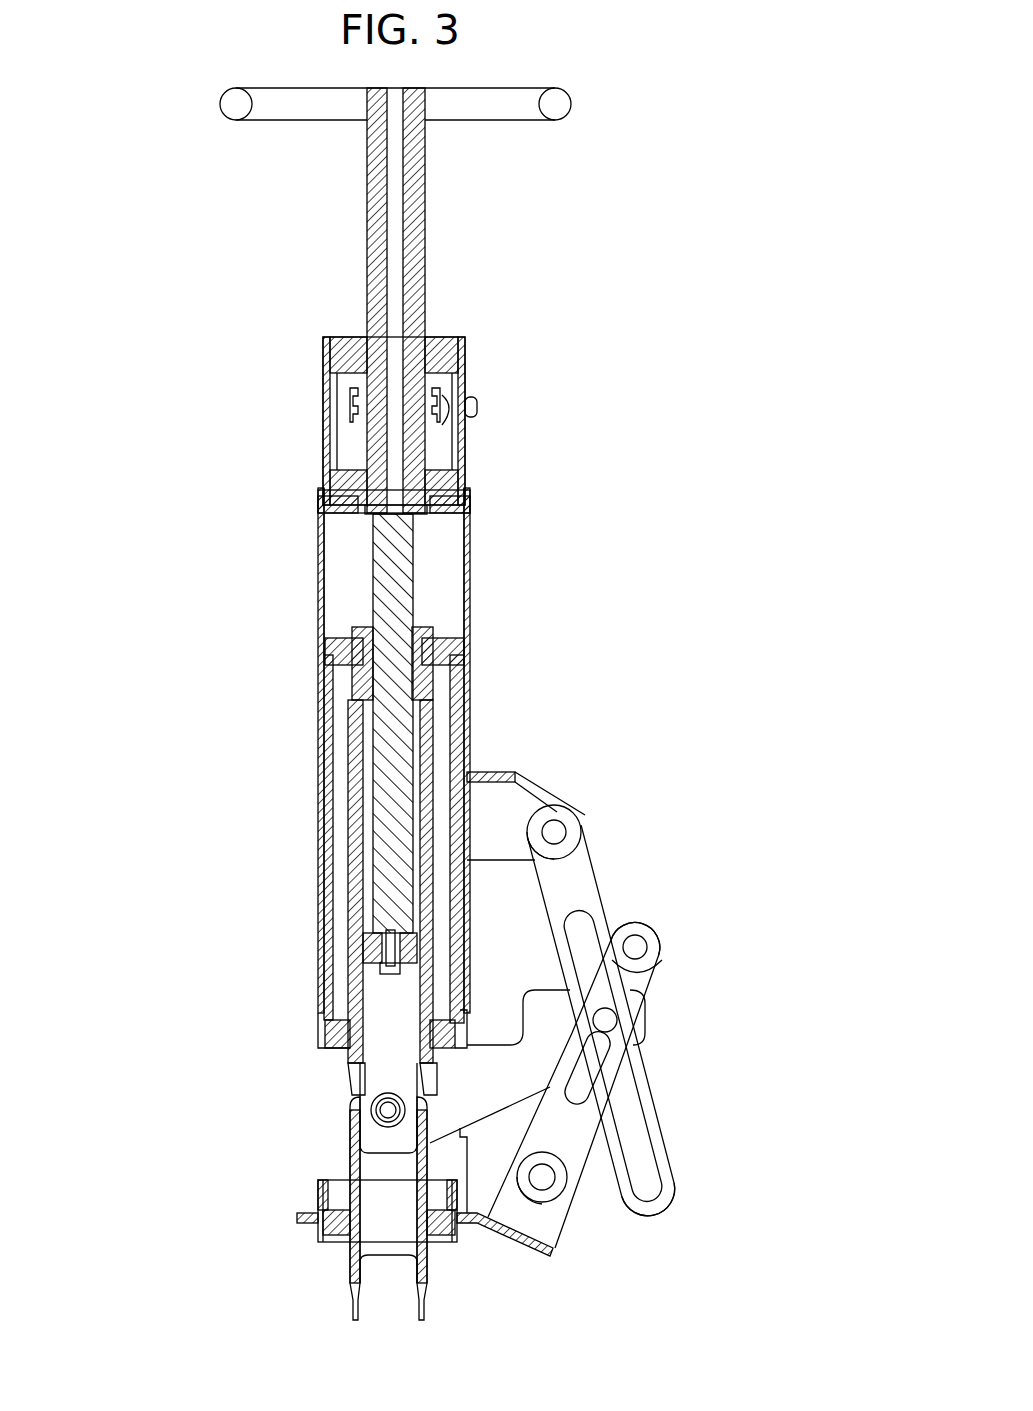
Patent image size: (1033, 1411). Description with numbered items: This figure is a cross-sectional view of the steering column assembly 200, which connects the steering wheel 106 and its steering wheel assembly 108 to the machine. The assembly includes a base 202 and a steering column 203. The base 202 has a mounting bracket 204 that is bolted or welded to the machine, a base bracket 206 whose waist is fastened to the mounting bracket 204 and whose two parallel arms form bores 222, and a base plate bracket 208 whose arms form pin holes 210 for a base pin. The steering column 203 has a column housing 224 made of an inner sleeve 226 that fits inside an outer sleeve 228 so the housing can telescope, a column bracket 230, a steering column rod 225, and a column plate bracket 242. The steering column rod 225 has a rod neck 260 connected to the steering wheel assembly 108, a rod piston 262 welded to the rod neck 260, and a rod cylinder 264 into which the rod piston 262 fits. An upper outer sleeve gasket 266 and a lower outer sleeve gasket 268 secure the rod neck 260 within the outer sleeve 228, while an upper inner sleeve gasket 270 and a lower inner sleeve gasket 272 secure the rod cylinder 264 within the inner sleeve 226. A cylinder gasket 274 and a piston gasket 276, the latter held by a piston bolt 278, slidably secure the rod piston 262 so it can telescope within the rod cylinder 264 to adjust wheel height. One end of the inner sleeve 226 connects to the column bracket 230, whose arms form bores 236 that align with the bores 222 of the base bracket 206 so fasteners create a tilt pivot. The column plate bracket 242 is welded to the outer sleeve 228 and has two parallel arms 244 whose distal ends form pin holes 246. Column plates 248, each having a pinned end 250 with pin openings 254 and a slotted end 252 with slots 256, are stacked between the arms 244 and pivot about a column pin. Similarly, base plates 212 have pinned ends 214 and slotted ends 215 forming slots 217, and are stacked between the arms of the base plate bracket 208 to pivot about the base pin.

The steering wheel 106 is at (195, 100).
The steering wheel assembly 108 is at (612, 100).
The steering column assembly 200 is at (193, 224).
The steering column rod 225 is at (373, 192).
The rod neck 260 is at (418, 192).
The upper outer sleeve gasket 266 is at (445, 348).
The steering column 203 is at (320, 535).
The lower outer sleeve gasket 268 is at (440, 492).
The rod piston 262 is at (398, 548).
The outer sleeve 228 is at (318, 583).
The column housing 224 is at (470, 570).
The upper inner sleeve gasket 270 is at (330, 652).
The cylinder gasket 274 is at (352, 683).
The rod cylinder 264 is at (435, 707).
The column plate bracket 242 is at (497, 792).
The arms 244 is at (525, 797).
The pin hole 246 is at (560, 832).
The pin openings 254 is at (565, 840).
The pinned end 250 is at (585, 858).
The column plates 248 is at (600, 918).
The slotted ends 215 is at (645, 930).
The base plates 212 is at (638, 950).
The slots 217 is at (640, 965).
The piston gasket 276 is at (365, 922).
The piston bolt 278 is at (390, 948).
The inner sleeve 226 is at (365, 962).
The lower inner sleeve gasket 272 is at (335, 1035).
The column bracket 230 is at (325, 1050).
The slots 256 is at (620, 1073).
The bores 222 is at (371, 1110).
The base bracket 206 is at (328, 1140).
The pinned ends 214 is at (556, 1168).
The bores 236 is at (340, 1200).
The slotted end 252 is at (670, 1172).
The base 202 is at (345, 1225).
The pin holes 210 is at (598, 1216).
The mounting bracket 204 is at (300, 1222).
The base plate bracket 208 is at (585, 1253).